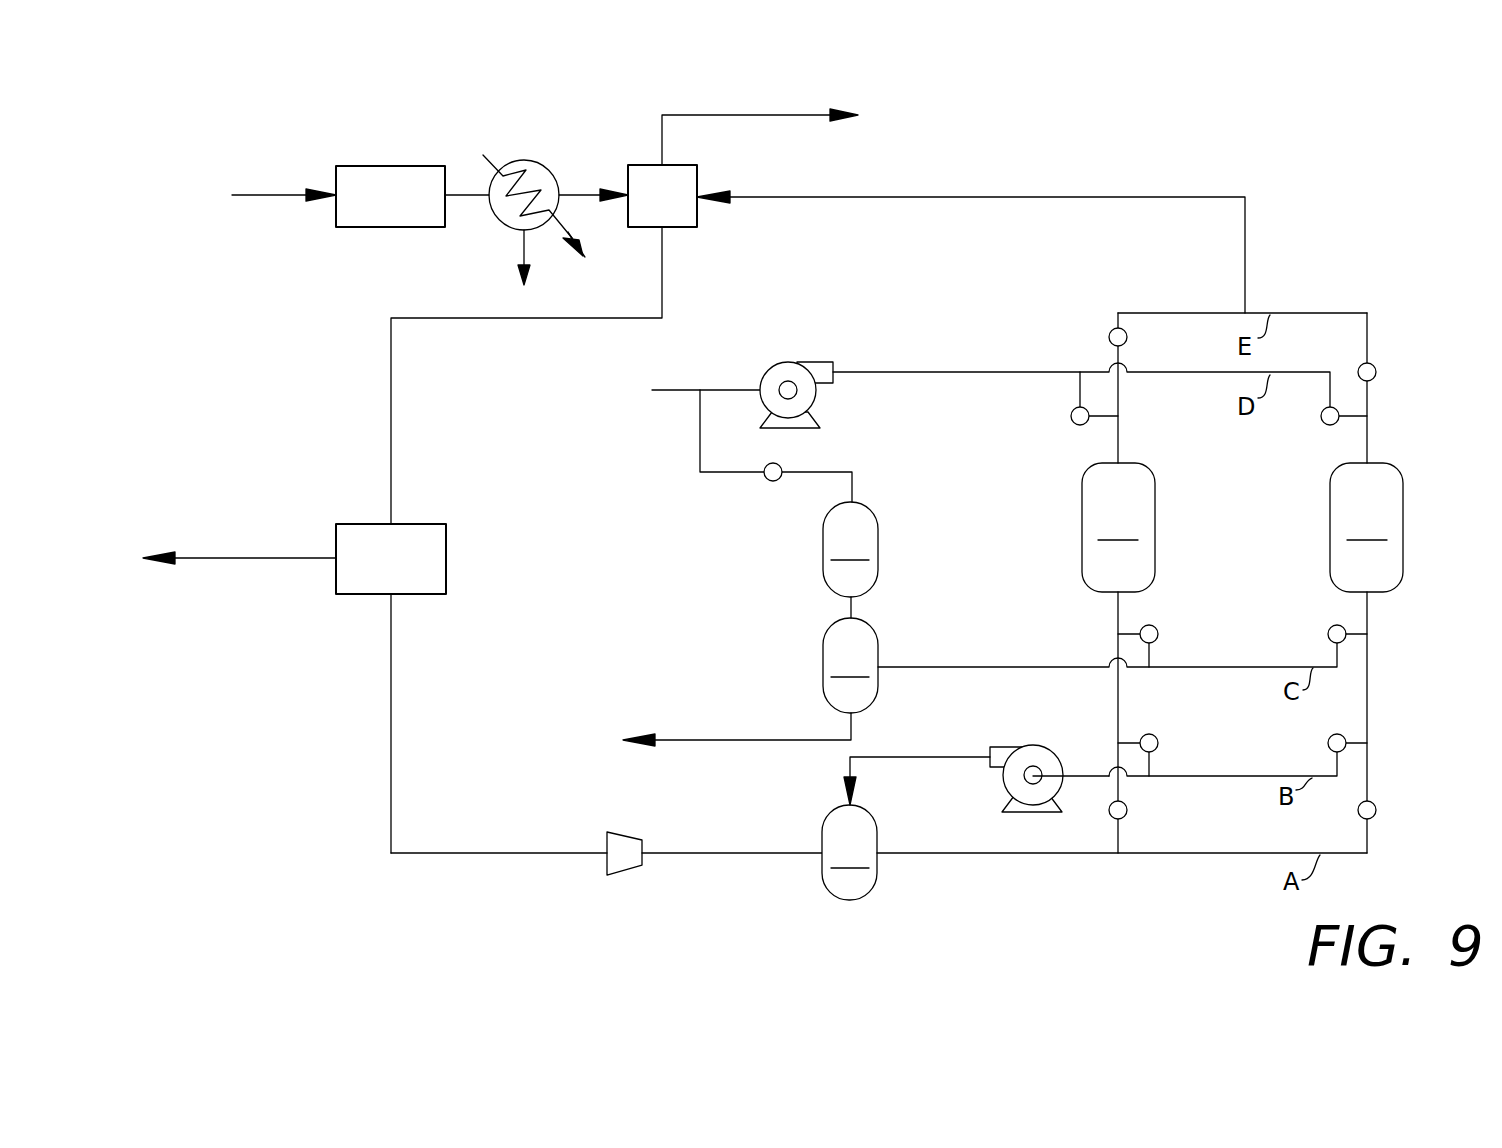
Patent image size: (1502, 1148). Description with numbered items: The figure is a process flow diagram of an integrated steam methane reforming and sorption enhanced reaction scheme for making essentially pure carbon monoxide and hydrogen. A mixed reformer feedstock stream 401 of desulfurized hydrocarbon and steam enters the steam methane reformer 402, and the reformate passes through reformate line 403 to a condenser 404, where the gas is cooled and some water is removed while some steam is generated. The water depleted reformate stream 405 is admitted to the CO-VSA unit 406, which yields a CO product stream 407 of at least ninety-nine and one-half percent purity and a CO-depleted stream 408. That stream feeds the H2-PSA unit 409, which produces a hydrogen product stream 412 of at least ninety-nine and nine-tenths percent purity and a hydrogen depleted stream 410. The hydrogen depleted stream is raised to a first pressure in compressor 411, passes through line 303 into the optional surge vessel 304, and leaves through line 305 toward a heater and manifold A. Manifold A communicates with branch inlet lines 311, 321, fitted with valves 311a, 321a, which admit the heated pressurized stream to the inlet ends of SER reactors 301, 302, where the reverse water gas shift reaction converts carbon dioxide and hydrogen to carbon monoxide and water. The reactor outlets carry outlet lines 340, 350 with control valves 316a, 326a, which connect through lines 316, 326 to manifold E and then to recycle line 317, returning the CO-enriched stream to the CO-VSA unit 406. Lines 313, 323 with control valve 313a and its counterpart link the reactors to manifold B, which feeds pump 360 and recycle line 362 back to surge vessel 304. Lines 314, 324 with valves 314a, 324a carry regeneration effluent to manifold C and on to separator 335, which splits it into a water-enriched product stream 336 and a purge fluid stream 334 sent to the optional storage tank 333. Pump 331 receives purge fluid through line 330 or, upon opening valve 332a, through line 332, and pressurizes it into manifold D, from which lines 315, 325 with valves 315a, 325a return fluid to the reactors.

The mixed reformer feedstock stream 401 is at (270, 198).
The steam methane reformer 402 is at (391, 163).
The reformate line 403 is at (465, 200).
The condenser 404 is at (530, 160).
The water depleted reformate stream 405 is at (578, 192).
The CO-VSA unit 406 is at (697, 213).
The CO product stream 407 is at (723, 117).
The CO-depleted stream 408 is at (662, 292).
The H2-PSA unit 409 is at (446, 565).
The hydrogen depleted stream 410 is at (391, 680).
The compressor 411 is at (630, 832).
The hydrogen product stream 412 is at (258, 560).
The SER reactor 301 is at (1118, 527).
The SER reactor 302 is at (1366, 527).
The pressurized hydrogen depleted stream line 303 is at (743, 855).
The surge vessel 304 is at (849, 852).
The transfer line 305 is at (900, 855).
The branch inlet line 311 is at (1118, 615).
The valve 311a is at (1128, 810).
The line 313 is at (1130, 742).
The control valve 313a is at (1160, 741).
The line 314 is at (1125, 633).
The valve 314a is at (1160, 632).
The line 315 is at (1101, 418).
The valve 315a is at (1071, 416).
The line 316 is at (1118, 320).
The control valve 316a is at (1108, 337).
The recycle line 317 is at (928, 197).
The branch inlet line 321 is at (1367, 612).
The valve 321a is at (1378, 810).
The line 323 is at (1352, 747).
The line 324 is at (1353, 637).
The valve 324a is at (1328, 628).
The line 325 is at (1330, 388).
The valve 325a is at (1322, 425).
The line 326 is at (1367, 328).
The control valve 326a is at (1376, 372).
The line 330 is at (676, 389).
The pump 331 is at (775, 362).
The line 332 is at (700, 430).
The valve 332a is at (772, 482).
The storage tank 333 is at (850, 549).
The purge fluid stream 334 is at (851, 610).
The separator 335 is at (850, 665).
The water-enriched product stream 336 is at (670, 738).
The outlet line 340 is at (1120, 443).
The outlet line 350 is at (1367, 440).
The pump 360 is at (1045, 748).
The recycle line 362 is at (892, 757).